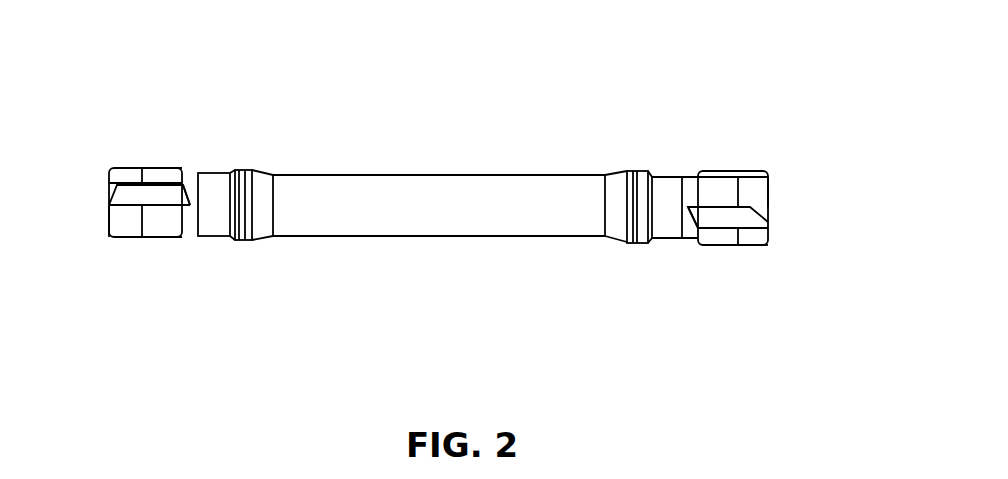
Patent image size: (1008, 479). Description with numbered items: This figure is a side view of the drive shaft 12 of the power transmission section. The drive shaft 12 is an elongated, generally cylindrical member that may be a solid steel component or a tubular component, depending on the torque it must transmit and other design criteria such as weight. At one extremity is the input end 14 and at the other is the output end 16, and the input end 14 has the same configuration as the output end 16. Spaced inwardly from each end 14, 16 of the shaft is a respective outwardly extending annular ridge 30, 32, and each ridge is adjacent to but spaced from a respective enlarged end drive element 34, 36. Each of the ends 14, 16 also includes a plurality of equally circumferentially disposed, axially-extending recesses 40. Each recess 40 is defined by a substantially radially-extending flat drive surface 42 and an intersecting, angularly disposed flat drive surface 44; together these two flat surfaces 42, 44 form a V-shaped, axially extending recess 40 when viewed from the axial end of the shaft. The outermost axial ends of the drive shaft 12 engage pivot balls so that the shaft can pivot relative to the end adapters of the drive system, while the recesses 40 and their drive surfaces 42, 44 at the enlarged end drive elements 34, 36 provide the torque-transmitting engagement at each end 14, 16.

The drive shaft 12 is at (422, 210).
The input end 14 is at (730, 247).
The output end 16 is at (162, 168).
The annular ridge 30 is at (640, 242).
The annular ridge 32 is at (247, 240).
The enlarged end drive element 34 is at (770, 175).
The enlarged end drive element 36 is at (130, 222).
The axially-extending recess 40 is at (144, 192).
The radially-extending flat drive surface 42 is at (158, 203).
The angularly disposed flat drive surface 44 is at (170, 197).